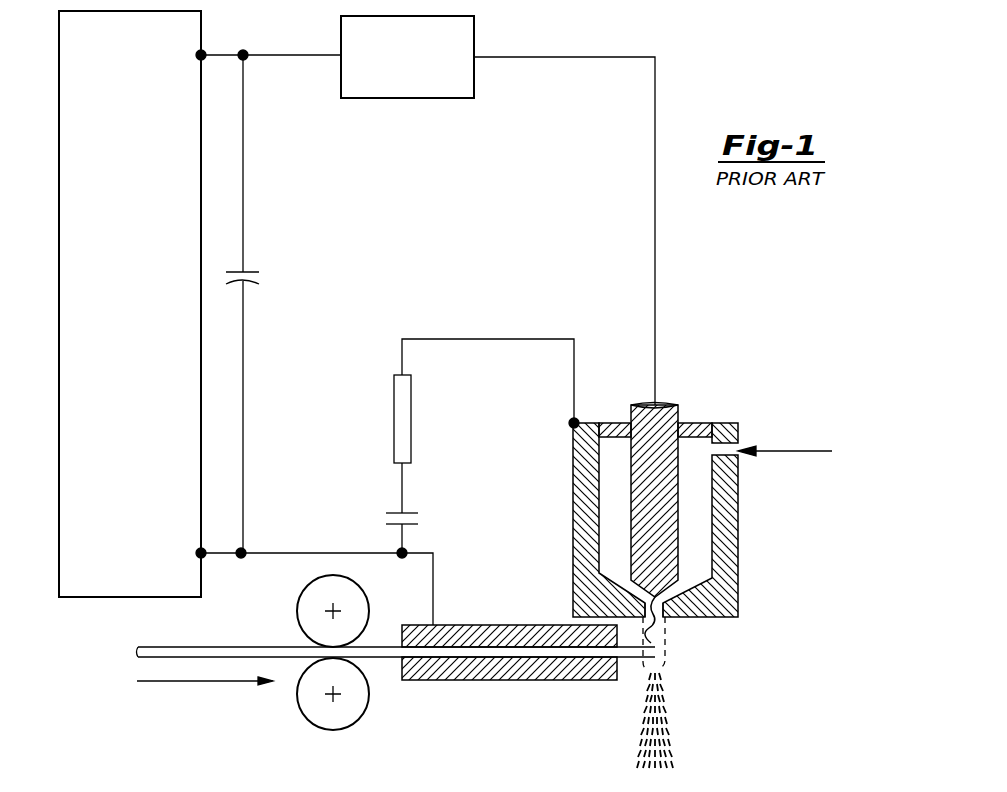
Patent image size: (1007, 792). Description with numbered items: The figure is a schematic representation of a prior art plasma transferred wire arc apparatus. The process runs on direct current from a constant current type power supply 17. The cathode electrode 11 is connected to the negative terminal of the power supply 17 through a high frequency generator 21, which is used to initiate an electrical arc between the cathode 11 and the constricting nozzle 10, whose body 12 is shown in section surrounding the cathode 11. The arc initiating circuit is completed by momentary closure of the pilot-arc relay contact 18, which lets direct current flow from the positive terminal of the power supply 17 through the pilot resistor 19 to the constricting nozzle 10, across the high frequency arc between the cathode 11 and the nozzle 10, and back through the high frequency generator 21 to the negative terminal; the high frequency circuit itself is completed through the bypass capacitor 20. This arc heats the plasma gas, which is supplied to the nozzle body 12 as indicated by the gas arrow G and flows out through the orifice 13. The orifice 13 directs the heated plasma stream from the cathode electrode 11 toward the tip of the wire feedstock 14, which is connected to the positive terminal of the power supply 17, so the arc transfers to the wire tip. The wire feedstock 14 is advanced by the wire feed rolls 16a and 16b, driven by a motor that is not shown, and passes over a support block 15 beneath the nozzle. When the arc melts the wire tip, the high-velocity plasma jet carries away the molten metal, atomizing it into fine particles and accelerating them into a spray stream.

The constricting nozzle 10 is at (708, 462).
The cathode electrode 11 is at (642, 405).
The nozzle housing 12 is at (612, 423).
The orifice 13 is at (700, 617).
The wire feedstock 14 is at (641, 668).
The support block / backing 15 is at (554, 625).
The wire feed roll 16a is at (305, 611).
The wire feed roll 16b is at (306, 707).
The power supply 17 is at (190, 180).
The pilot-arc relay contact 18 is at (414, 521).
The pilot resistor 19 is at (411, 405).
The bypass capacitor 20 is at (259, 272).
The high frequency generator 21 is at (436, 98).
The gas supply G is at (797, 453).